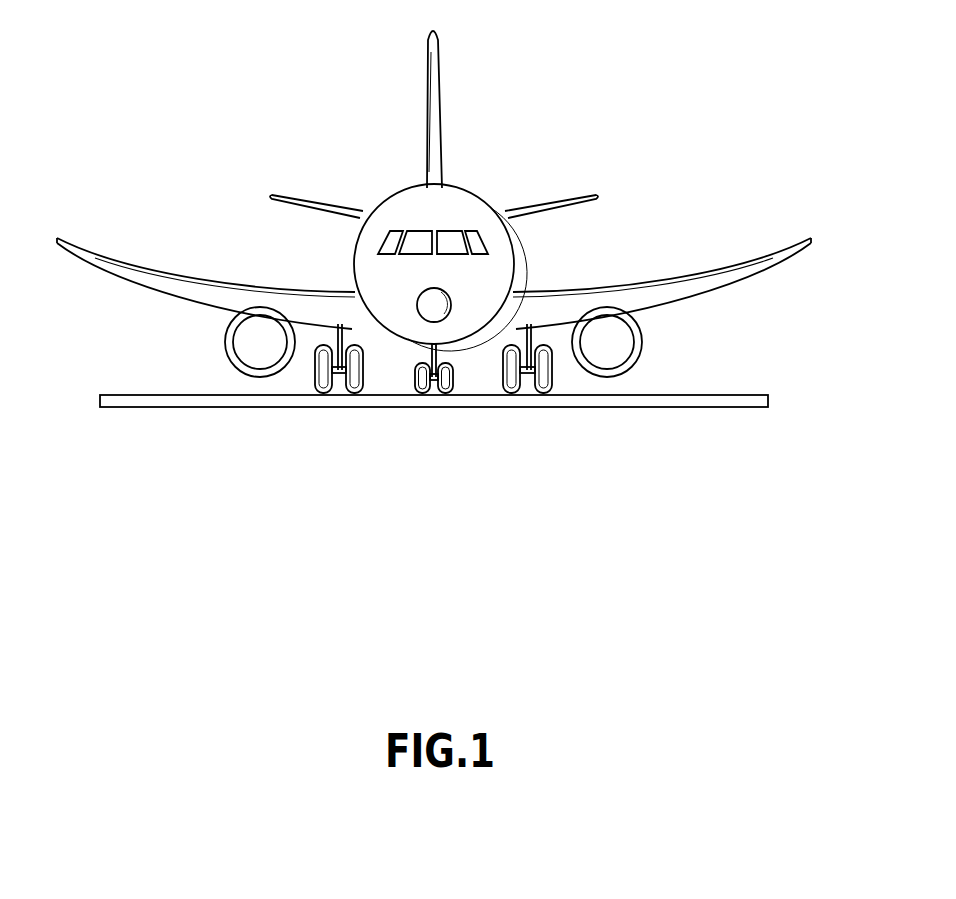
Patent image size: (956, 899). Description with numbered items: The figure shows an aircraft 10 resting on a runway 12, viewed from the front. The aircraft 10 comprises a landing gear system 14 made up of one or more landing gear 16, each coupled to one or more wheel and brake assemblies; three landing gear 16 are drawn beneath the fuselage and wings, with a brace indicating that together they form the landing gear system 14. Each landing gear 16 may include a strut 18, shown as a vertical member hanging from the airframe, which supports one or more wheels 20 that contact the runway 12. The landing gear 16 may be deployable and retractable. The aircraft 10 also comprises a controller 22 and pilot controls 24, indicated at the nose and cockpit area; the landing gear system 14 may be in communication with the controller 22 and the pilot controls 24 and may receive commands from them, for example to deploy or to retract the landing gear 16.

The aircraft 10 is at (434, 325).
The runway 12 is at (757, 394).
The landing gear system 14 is at (457, 478).
The landing gear 16 is at (398, 428).
The strut 18 is at (334, 326).
The wheel 20 is at (312, 384).
The controller 22 is at (467, 310).
The pilot controls 24 is at (385, 233).